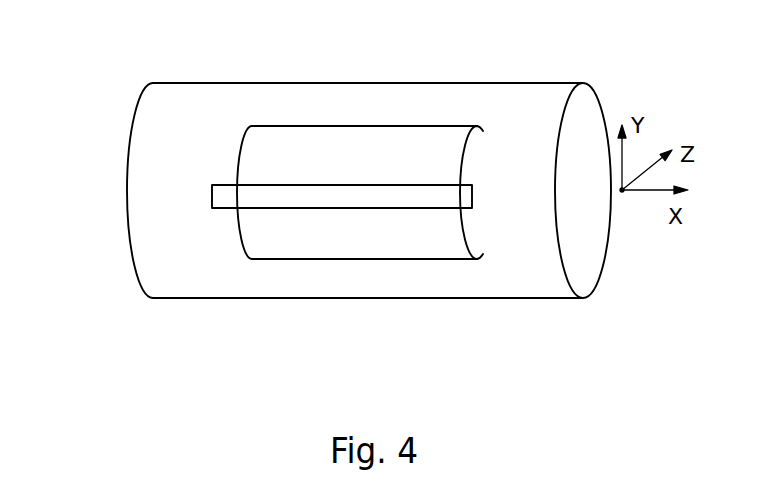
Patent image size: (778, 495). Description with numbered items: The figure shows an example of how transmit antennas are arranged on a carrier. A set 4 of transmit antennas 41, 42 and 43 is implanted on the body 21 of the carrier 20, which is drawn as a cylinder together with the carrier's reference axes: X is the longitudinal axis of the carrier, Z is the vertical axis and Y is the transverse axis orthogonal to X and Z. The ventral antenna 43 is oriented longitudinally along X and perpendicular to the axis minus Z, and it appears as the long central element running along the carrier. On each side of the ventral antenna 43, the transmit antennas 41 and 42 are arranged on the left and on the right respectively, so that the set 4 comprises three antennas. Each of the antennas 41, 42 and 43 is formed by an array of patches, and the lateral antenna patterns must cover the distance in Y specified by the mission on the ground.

The set of transmit antennas 4 is at (147, 186).
The carrier 20 is at (215, 322).
The body of the carrier 21 is at (513, 298).
The transmit antenna 41 is at (392, 125).
The transmit antenna 42 is at (352, 259).
The ventral antenna 43 is at (212, 200).